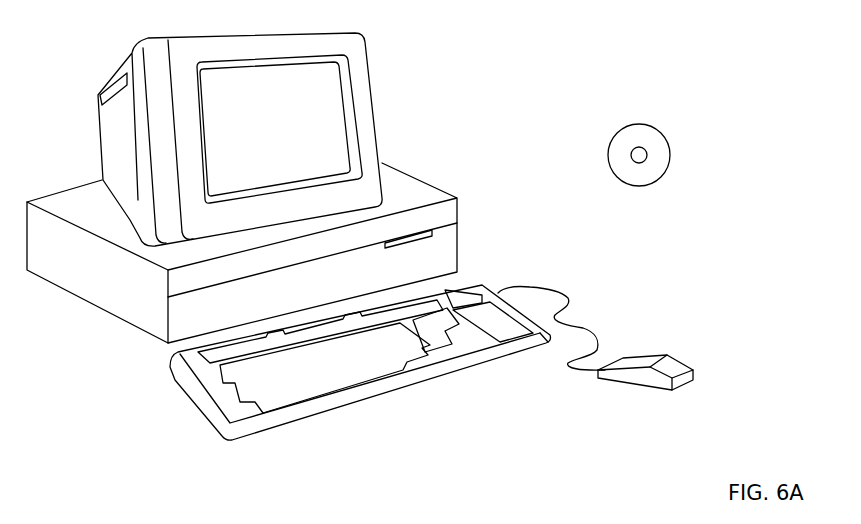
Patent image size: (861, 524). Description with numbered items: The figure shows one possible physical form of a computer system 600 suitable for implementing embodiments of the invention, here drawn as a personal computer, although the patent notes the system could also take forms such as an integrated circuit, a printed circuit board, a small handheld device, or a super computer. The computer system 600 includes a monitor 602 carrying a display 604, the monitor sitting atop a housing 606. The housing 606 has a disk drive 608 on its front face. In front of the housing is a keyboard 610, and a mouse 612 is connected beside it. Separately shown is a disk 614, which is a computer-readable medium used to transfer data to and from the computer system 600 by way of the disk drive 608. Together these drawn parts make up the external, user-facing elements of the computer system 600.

The computer system 600 is at (732, 45).
The monitor 602 is at (378, 138).
The display 604 is at (340, 93).
The housing 606 is at (138, 330).
The disk drive 608 is at (433, 230).
The keyboard 610 is at (363, 400).
The mouse 612 is at (683, 362).
The disk 614 is at (655, 125).